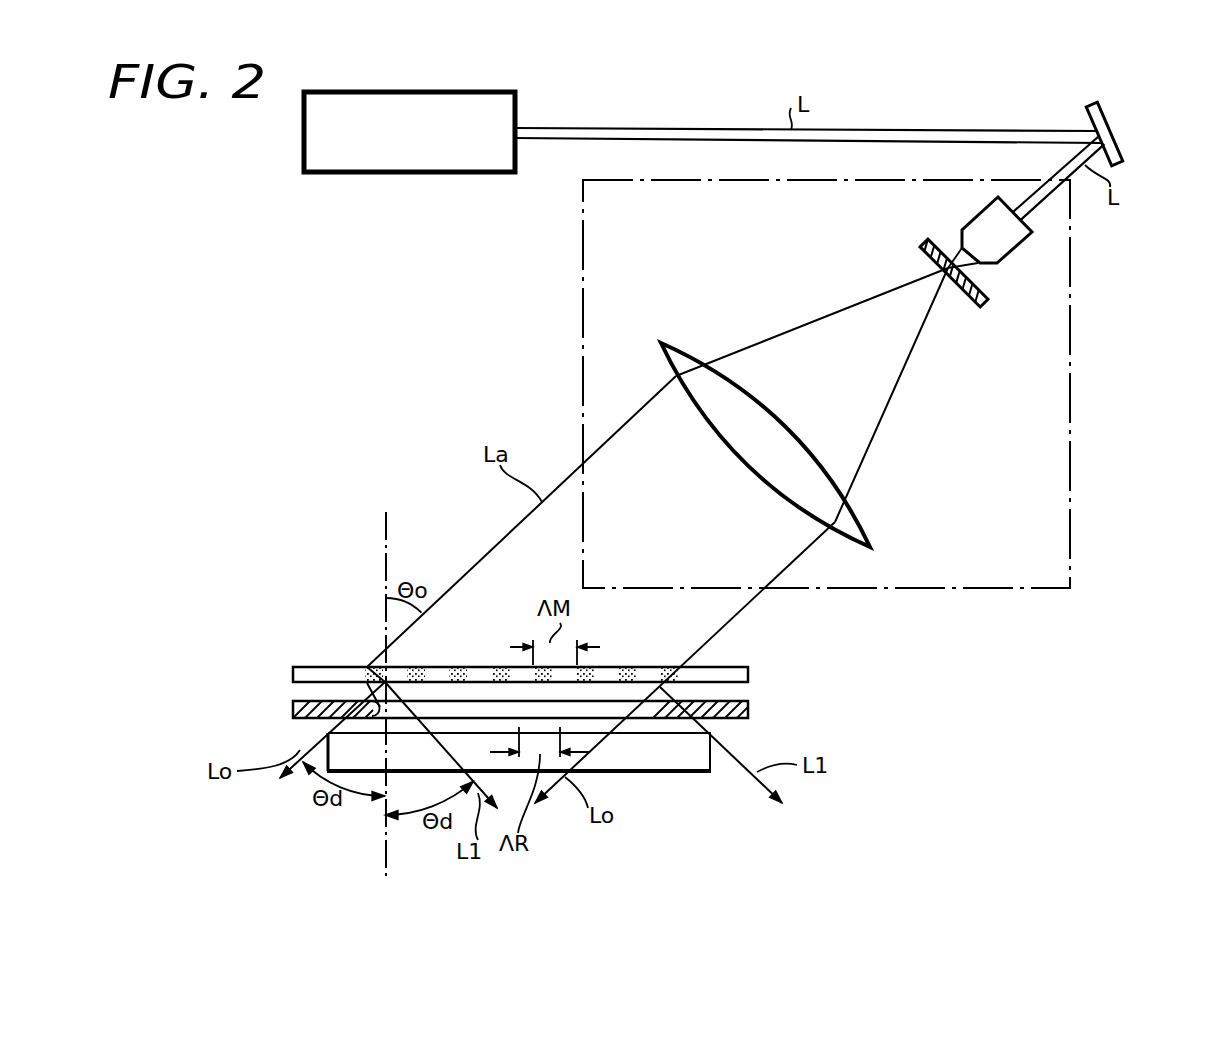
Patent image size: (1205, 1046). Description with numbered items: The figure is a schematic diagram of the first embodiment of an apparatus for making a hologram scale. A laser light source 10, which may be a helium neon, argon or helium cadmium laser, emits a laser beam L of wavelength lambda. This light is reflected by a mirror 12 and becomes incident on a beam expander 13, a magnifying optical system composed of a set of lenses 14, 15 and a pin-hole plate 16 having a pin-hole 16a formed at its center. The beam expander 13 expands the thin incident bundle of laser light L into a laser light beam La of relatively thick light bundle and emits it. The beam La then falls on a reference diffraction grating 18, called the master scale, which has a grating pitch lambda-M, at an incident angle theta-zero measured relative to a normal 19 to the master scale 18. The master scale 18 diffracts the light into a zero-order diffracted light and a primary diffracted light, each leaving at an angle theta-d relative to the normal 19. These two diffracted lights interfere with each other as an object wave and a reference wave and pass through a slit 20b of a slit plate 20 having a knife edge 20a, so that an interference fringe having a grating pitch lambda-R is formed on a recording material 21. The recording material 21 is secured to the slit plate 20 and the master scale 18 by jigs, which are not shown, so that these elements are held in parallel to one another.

The laser light source 10 is at (403, 172).
The mirror 12 is at (1118, 145).
The beam expander 13 is at (583, 228).
The lens 14 is at (1012, 243).
The lens 15 is at (867, 530).
The pin-hole plate 16 is at (988, 306).
The pin-hole 16a is at (945, 268).
The reference diffraction grating (master scale) 18 is at (748, 679).
The normal 19 is at (386, 540).
The slit plate 20 is at (748, 712).
The knife edge 20a is at (373, 700).
The slit 20b is at (464, 712).
The recording material 21 is at (650, 768).